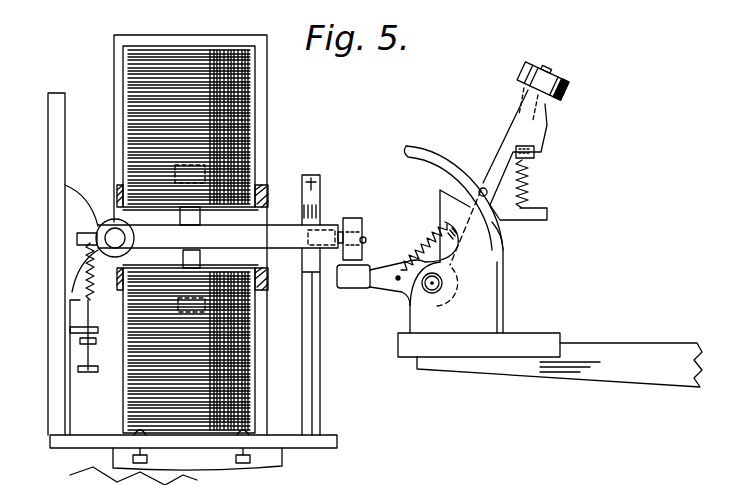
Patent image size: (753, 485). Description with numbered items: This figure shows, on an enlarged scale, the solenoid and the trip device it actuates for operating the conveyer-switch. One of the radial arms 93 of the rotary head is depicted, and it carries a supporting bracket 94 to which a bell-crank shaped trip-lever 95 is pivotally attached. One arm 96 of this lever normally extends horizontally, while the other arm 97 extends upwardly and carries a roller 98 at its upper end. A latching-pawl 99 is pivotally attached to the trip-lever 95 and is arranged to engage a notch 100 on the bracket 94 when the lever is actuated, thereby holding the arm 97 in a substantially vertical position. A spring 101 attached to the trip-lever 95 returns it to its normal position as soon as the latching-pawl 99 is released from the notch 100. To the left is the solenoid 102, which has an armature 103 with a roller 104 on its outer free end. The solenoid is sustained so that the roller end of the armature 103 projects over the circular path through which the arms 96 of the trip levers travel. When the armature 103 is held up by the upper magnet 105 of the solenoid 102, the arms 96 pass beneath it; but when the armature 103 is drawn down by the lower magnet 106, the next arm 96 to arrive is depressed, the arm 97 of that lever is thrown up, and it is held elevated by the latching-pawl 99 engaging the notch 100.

The radial arm 93 is at (550, 350).
The supporting bracket 94 is at (493, 288).
The bell-crank shaped trip-lever 95 is at (430, 224).
The arm of the trip-lever 96 is at (362, 276).
The arm of the trip-lever 97 is at (508, 130).
The roller 98 is at (568, 96).
The latching-pawl 99 is at (444, 157).
The notch 100 is at (467, 212).
The spring 101 is at (402, 258).
The solenoid 102 is at (266, 155).
The armature 103 is at (285, 243).
The roller 104 is at (356, 216).
The upper magnet 105 is at (253, 103).
The lower magnet 106 is at (252, 360).